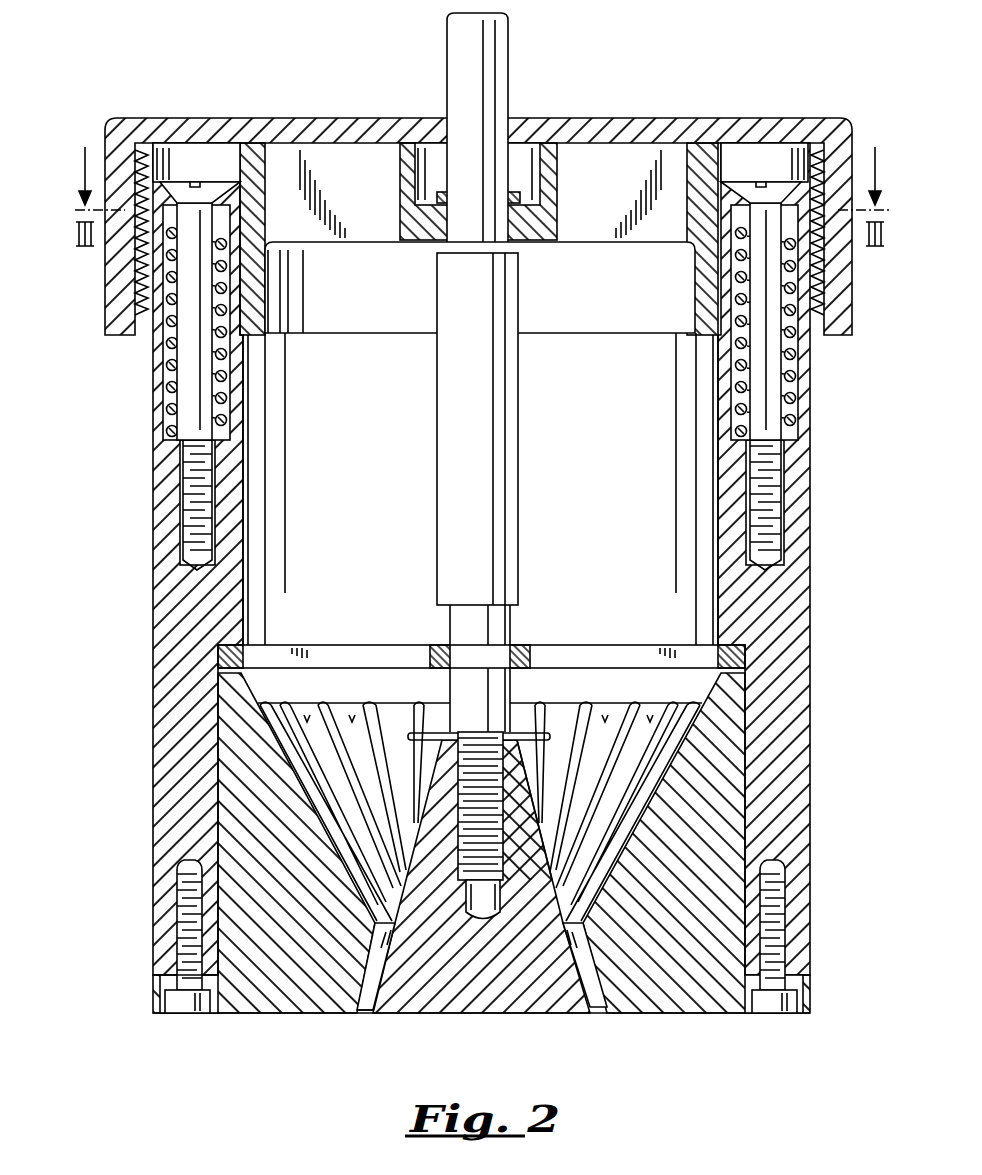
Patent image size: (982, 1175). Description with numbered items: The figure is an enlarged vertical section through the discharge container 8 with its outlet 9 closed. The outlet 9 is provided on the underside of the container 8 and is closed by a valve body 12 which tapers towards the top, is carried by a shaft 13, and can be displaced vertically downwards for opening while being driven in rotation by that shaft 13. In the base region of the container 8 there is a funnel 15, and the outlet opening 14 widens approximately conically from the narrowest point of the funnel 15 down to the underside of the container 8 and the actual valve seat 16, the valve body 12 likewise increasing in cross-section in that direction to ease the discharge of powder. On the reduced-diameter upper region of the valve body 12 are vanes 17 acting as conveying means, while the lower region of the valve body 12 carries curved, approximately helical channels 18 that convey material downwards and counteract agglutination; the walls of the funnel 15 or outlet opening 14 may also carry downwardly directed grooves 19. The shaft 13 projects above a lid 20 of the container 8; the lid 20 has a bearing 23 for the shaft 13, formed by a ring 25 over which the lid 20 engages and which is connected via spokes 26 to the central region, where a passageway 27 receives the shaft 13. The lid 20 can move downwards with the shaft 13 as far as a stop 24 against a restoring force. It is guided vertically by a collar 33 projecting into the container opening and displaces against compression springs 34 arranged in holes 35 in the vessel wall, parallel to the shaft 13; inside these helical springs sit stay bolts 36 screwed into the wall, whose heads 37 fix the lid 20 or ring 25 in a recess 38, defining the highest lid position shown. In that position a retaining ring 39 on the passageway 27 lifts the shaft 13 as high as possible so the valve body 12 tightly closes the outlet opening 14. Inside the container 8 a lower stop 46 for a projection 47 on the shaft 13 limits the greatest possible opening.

The discharge container 8 is at (135, 605).
The outlet 9 is at (360, 1025).
The valve body 12 is at (480, 995).
The shaft 13 is at (505, 522).
The outlet opening 14 is at (358, 1008).
The funnel 15 is at (330, 690).
The valve seat 16 is at (600, 1005).
The vanes 17 is at (410, 728).
The curved channels 18 is at (390, 990).
The grooves 19 is at (652, 718).
The lid 20 is at (582, 128).
The bearing 23 is at (412, 232).
The stop 24 is at (150, 276).
The ring 25 is at (257, 140).
The spokes 26 is at (330, 155).
The passageway 27 is at (455, 225).
The collar 33 is at (697, 320).
The compression springs 34 is at (165, 427).
The recesses or holes 35 is at (172, 372).
The stay bolts 36 is at (185, 400).
The heads 37 is at (195, 180).
The recess 38 is at (238, 155).
The retaining ring 39 is at (522, 196).
The lower stop 46 is at (435, 648).
The projection 47 is at (470, 612).